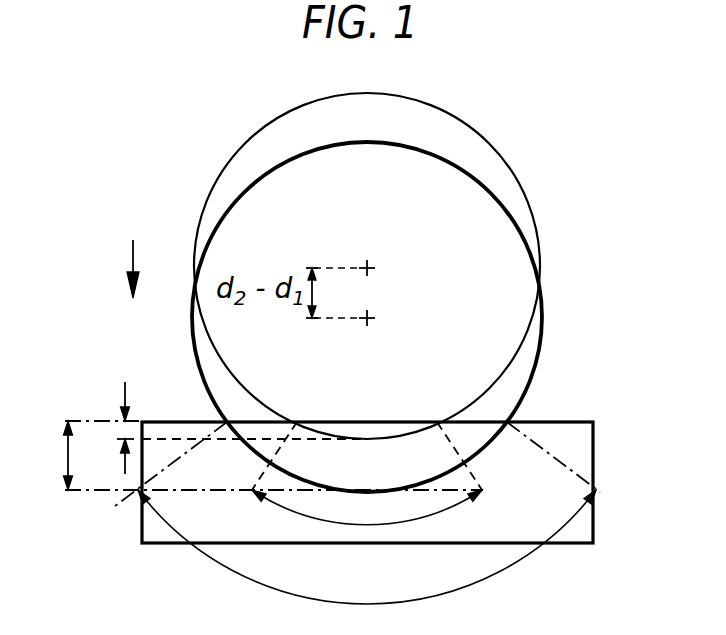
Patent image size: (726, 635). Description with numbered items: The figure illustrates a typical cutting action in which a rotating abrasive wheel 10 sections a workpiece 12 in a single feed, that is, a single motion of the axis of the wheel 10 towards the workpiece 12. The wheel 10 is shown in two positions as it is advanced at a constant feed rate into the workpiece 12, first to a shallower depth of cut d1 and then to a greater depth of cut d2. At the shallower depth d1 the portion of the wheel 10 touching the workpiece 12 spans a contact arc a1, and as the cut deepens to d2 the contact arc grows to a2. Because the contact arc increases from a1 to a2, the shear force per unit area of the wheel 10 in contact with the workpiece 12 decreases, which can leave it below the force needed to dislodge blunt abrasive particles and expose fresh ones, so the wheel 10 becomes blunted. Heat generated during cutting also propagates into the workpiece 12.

The wheel 10 is at (473, 132).
The workpiece 12 is at (593, 477).
The contact arc a1 is at (367, 509).
The contact arc a2 is at (367, 548).
The depth of cut d1 is at (127, 408).
The depth of cut d2 is at (51, 455).